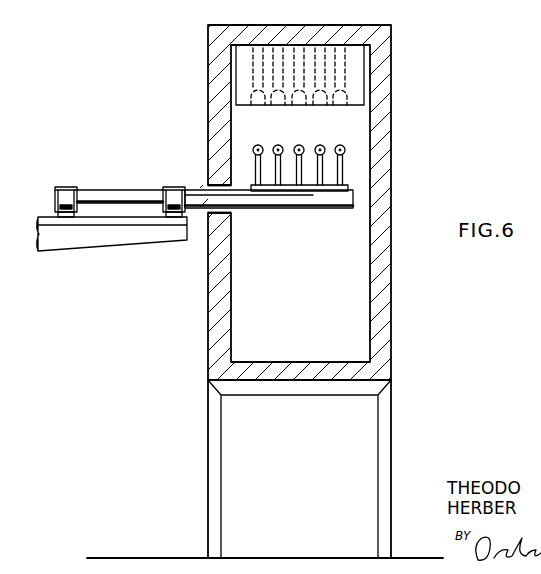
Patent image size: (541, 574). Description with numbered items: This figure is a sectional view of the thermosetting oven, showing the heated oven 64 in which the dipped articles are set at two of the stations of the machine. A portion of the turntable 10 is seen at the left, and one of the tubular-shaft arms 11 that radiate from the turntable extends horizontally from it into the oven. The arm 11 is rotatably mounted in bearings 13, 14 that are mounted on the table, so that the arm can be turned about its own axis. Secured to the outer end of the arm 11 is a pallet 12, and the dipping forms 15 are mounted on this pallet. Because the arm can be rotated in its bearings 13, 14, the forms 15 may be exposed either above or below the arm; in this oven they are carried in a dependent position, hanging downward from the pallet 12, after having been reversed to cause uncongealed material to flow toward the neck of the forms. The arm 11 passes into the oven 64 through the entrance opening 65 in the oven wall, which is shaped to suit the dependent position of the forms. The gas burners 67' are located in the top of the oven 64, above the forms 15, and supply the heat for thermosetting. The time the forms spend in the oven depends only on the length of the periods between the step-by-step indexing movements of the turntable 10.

The turntable 10 is at (131, 226).
The arm 11 is at (135, 190).
The pallet 12 is at (312, 191).
The bearing 13 is at (168, 187).
The bearing 14 is at (63, 187).
The dipping form 15 is at (320, 145).
The heated oven 64 is at (390, 148).
The entrance opening 65 is at (224, 209).
The gas burners 67' is at (300, 86).